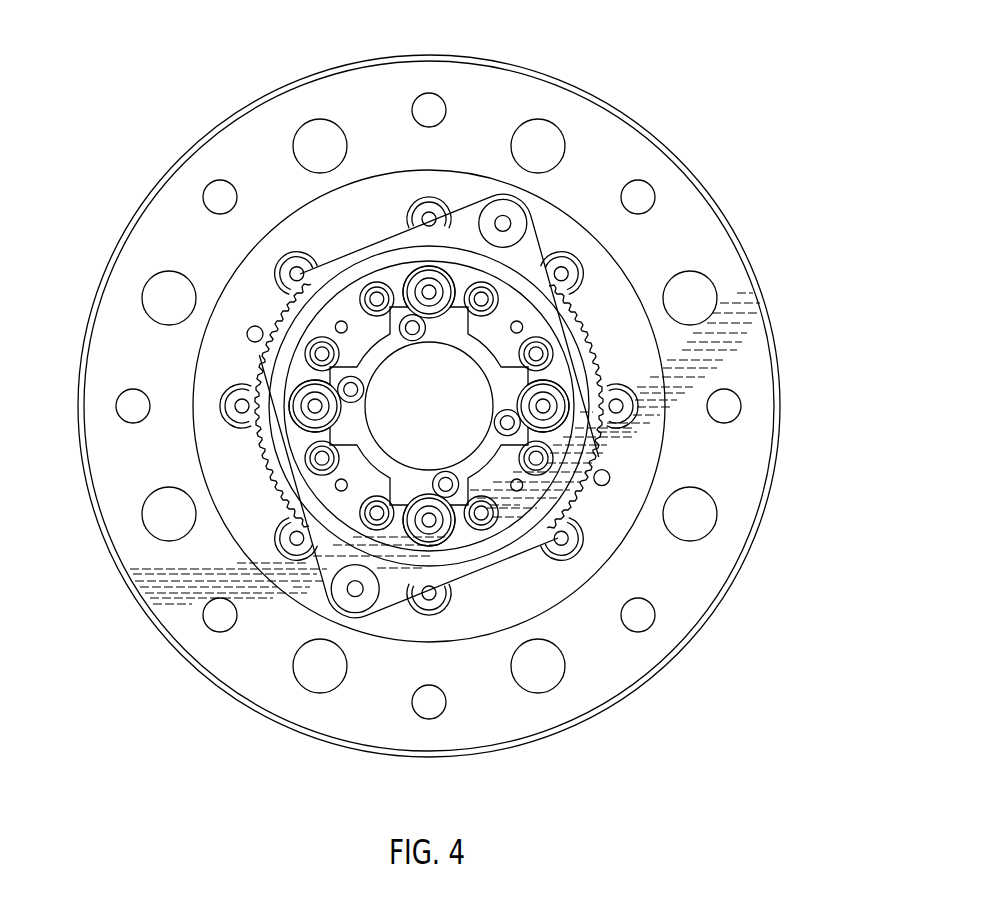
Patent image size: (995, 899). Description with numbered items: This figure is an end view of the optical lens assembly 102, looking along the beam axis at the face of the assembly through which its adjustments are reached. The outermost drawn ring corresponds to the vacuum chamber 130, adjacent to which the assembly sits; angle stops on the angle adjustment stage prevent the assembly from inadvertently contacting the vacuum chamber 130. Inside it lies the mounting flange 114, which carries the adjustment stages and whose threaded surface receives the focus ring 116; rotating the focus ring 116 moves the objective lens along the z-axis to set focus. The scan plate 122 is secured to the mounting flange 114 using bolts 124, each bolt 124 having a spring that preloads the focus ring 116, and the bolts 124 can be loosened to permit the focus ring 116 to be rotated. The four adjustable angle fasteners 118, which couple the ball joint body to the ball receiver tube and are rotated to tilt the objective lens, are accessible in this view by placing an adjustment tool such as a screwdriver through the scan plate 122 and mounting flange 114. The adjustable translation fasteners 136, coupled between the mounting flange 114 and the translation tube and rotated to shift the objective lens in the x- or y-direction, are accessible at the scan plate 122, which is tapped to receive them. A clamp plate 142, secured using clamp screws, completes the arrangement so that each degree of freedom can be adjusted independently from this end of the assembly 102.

The optical lens assembly 102 is at (797, 116).
The mounting flange 114 is at (640, 460).
The focus ring 116 is at (270, 467).
The adjustable angle fasteners 118 is at (418, 285).
The scan plate 122 is at (390, 580).
The bolts 124 is at (503, 209).
The vacuum chamber 130 is at (612, 128).
The adjustable translation fasteners 136 is at (412, 327).
The clamp plate 142 is at (513, 313).